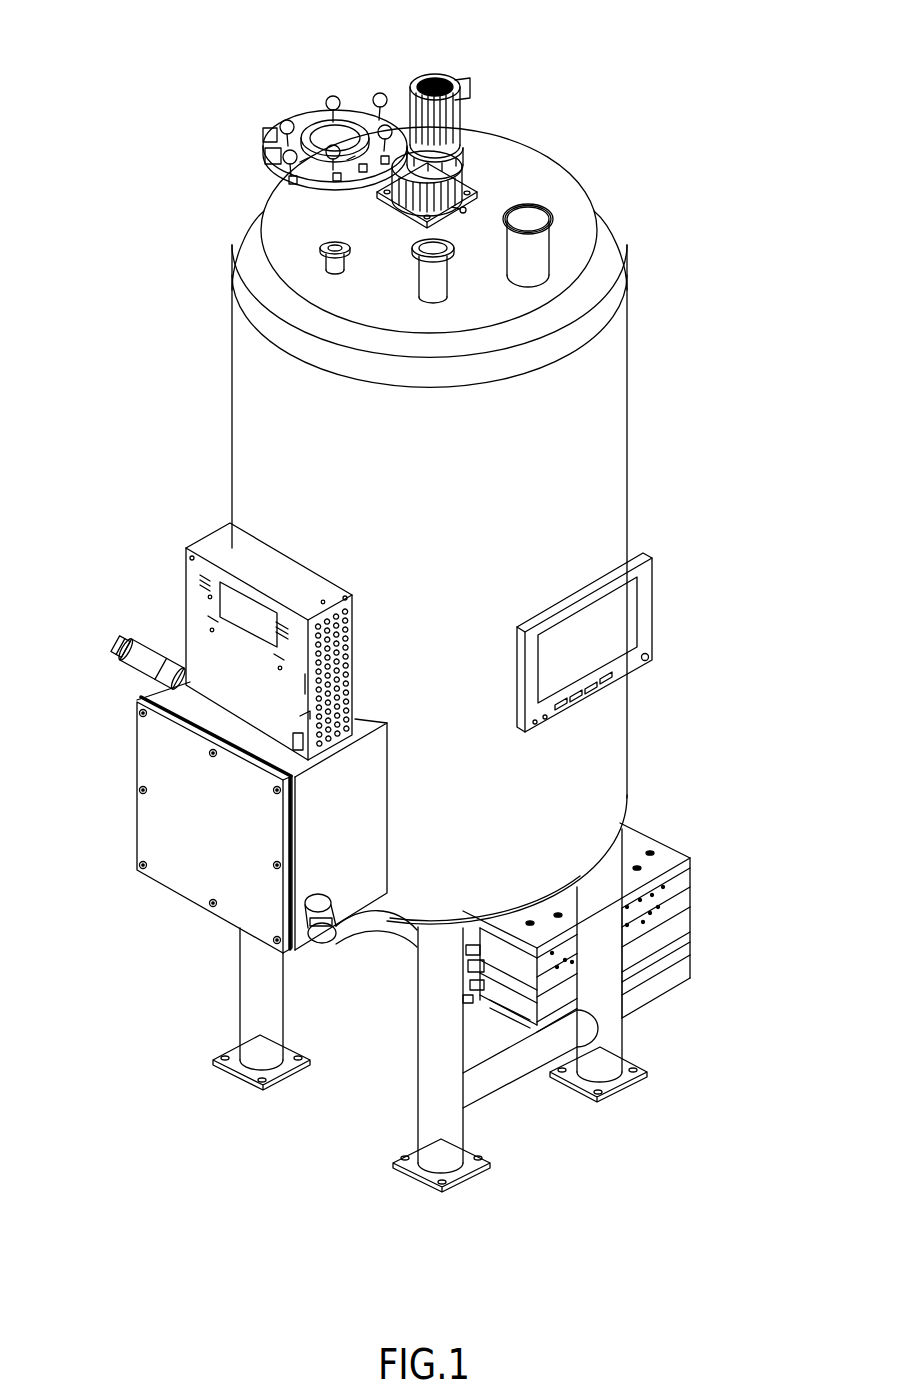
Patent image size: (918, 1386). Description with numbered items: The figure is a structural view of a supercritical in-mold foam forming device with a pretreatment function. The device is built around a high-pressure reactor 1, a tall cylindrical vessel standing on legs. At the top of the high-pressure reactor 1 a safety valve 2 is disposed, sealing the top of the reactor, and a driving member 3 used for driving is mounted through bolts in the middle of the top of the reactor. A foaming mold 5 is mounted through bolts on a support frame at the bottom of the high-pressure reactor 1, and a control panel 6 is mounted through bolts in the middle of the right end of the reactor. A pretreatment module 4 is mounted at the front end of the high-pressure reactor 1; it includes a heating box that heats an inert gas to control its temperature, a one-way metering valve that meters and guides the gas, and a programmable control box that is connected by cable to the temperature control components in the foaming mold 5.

The high-pressure reactor 1 is at (247, 428).
The safety valve 2 is at (312, 115).
The driving member 3 is at (467, 118).
The pretreatment module 4 is at (155, 775).
The foaming mold 5 is at (677, 857).
The control panel 6 is at (618, 637).